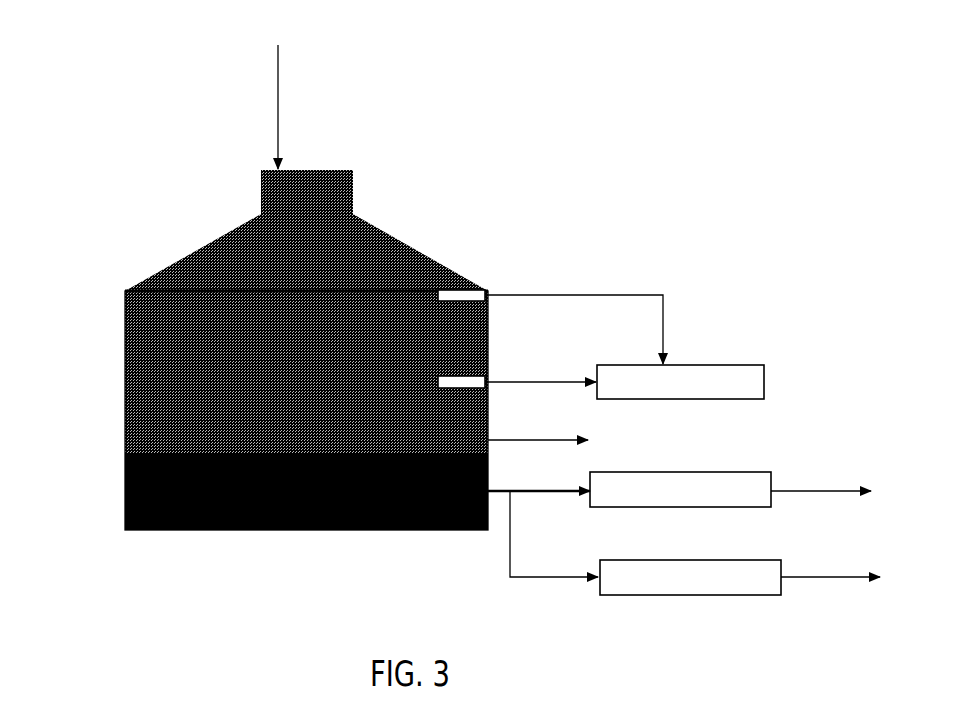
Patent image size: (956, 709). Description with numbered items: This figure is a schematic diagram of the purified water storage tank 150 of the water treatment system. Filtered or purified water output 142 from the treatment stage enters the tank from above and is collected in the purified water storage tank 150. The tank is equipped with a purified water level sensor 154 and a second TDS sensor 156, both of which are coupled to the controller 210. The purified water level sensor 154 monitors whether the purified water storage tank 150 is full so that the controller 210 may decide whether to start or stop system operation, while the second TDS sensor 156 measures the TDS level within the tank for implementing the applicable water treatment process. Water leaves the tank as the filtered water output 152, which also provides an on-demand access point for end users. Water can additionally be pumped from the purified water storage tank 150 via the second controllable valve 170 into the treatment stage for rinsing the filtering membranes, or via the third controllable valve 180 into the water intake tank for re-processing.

The purified water output 142 is at (268, 88).
The purified water storage tank 150 is at (116, 385).
The filtered water output 152 is at (513, 432).
The purified water level sensor 154 is at (463, 283).
The second TDS sensor 156 is at (478, 363).
The second controllable valve 170 is at (700, 464).
The third controllable valve 180 is at (712, 552).
The controller 210 is at (723, 356).